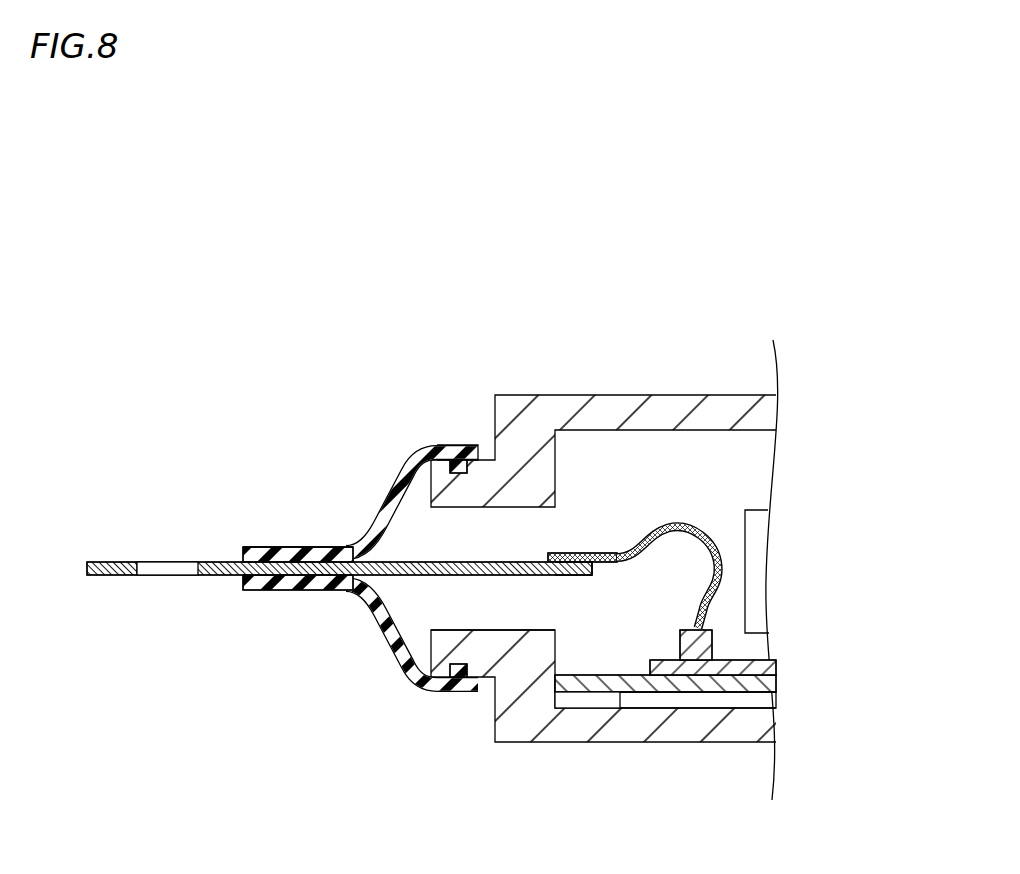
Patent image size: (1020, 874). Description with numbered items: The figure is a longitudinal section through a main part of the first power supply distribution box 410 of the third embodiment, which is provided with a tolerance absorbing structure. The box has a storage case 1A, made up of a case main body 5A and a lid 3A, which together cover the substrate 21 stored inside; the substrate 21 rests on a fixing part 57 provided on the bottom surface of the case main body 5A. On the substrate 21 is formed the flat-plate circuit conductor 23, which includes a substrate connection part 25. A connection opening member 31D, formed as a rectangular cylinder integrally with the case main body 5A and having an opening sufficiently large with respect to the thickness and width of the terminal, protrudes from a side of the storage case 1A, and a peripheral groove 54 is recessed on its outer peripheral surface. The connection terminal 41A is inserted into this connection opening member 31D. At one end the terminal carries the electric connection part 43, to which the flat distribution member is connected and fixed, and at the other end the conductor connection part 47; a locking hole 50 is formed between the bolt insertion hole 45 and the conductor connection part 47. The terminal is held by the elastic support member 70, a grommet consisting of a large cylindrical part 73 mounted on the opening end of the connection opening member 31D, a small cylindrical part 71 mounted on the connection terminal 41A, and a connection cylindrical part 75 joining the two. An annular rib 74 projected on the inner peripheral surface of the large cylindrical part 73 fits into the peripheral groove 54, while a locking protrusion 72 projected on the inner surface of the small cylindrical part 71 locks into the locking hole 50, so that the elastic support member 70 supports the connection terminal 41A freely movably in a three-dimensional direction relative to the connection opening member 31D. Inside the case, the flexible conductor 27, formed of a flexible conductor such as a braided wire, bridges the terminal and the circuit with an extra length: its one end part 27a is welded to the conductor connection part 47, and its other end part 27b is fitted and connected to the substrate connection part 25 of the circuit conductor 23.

The first power supply distribution box 410 is at (548, 303).
The storage case 1A is at (717, 390).
The lid 3A is at (637, 410).
The case main body 5A is at (537, 730).
The substrate 21 is at (578, 670).
The circuit conductor 23 is at (661, 651).
The substrate connection part 25 is at (717, 643).
The flexible conductor 27 is at (681, 517).
The one end part of the flexible conductor 27a is at (575, 553).
The other end part of the flexible conductor 27b is at (705, 615).
The connection opening member 31D is at (426, 632).
The connection terminal 41A is at (215, 555).
The electric connection part 43 is at (118, 562).
The bolt insertion hole 45 is at (145, 568).
The conductor connection part 47 is at (576, 578).
The locking hole 50 is at (303, 568).
The peripheral groove 54 is at (458, 675).
The fixing part 57 is at (600, 700).
The elastic support member 70 is at (452, 331).
The small cylindrical part 71 is at (267, 547).
The locking protrusion 72 is at (276, 567).
The large cylindrical part 73 is at (448, 445).
The annular rib 74 is at (456, 474).
The connection cylindrical part 75 is at (380, 508).